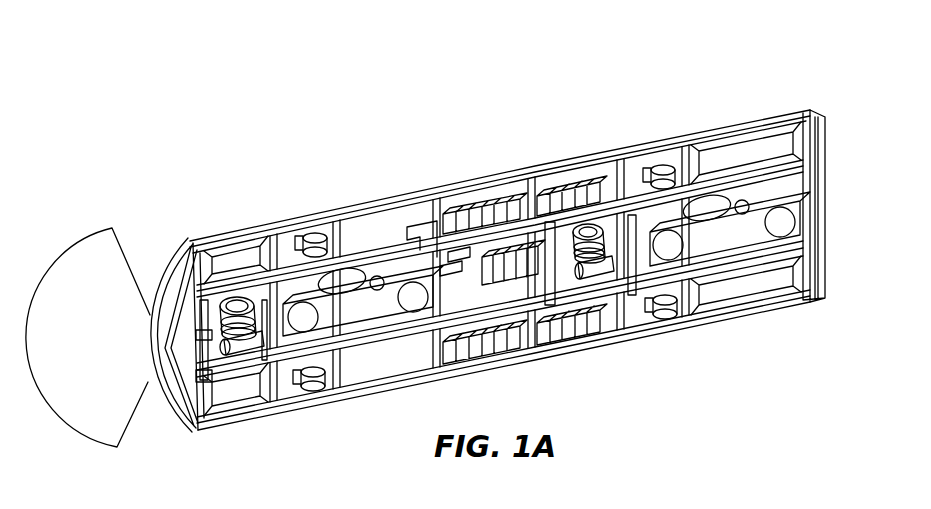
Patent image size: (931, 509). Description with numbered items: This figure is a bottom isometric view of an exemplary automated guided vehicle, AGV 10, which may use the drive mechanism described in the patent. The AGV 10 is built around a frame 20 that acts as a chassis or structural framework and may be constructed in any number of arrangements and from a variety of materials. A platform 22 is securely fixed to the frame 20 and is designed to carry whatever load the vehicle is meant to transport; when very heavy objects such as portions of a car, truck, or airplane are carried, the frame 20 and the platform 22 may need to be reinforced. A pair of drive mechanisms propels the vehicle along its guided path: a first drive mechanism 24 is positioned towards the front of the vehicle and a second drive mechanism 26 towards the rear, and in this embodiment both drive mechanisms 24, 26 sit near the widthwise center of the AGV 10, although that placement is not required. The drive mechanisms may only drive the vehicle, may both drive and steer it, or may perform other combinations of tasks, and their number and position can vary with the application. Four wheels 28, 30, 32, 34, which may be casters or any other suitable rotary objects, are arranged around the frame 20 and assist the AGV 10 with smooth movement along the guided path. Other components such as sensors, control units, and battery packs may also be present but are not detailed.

The automated guided vehicle 10 is at (781, 67).
The frame 20 is at (365, 252).
The platform 22 is at (738, 152).
The first drive mechanism 24 is at (237, 308).
The second drive mechanism 26 is at (607, 197).
The wheel 28 is at (315, 240).
The wheel 30 is at (322, 373).
The wheel 32 is at (665, 170).
The wheel 34 is at (673, 303).